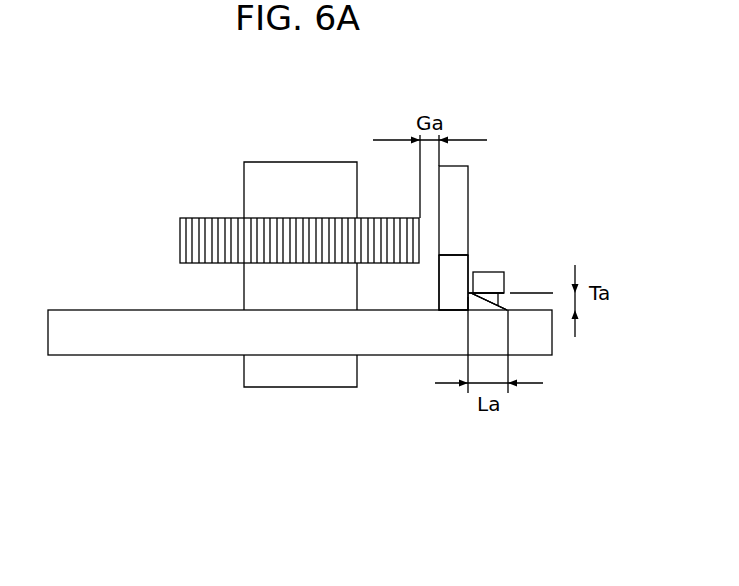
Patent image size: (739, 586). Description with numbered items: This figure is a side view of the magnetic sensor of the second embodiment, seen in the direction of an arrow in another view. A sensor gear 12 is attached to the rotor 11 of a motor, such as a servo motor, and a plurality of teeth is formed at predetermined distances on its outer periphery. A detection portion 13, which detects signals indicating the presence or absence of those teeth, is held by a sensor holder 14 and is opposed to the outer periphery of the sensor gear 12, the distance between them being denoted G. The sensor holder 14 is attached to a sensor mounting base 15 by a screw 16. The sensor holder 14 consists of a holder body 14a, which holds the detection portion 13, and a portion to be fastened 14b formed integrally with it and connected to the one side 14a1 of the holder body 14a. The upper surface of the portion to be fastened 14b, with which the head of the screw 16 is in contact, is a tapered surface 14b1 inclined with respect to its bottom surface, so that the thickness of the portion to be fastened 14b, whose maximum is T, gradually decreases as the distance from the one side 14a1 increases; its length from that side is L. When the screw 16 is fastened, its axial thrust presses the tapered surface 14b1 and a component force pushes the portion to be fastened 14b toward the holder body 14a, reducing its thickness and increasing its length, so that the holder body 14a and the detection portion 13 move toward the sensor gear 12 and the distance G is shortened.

The rotor 11 is at (277, 172).
The sensor gear 12 is at (207, 223).
The detection portion 13 is at (458, 178).
The sensor holder 14 is at (435, 449).
The holder body 14a is at (451, 300).
The one side of the holder body 14a1 is at (470, 262).
The portion to be fastened 14b is at (490, 300).
The tapered surface 14b1 is at (512, 304).
The sensor mounting base 15 is at (105, 323).
The screw 16 is at (496, 286).